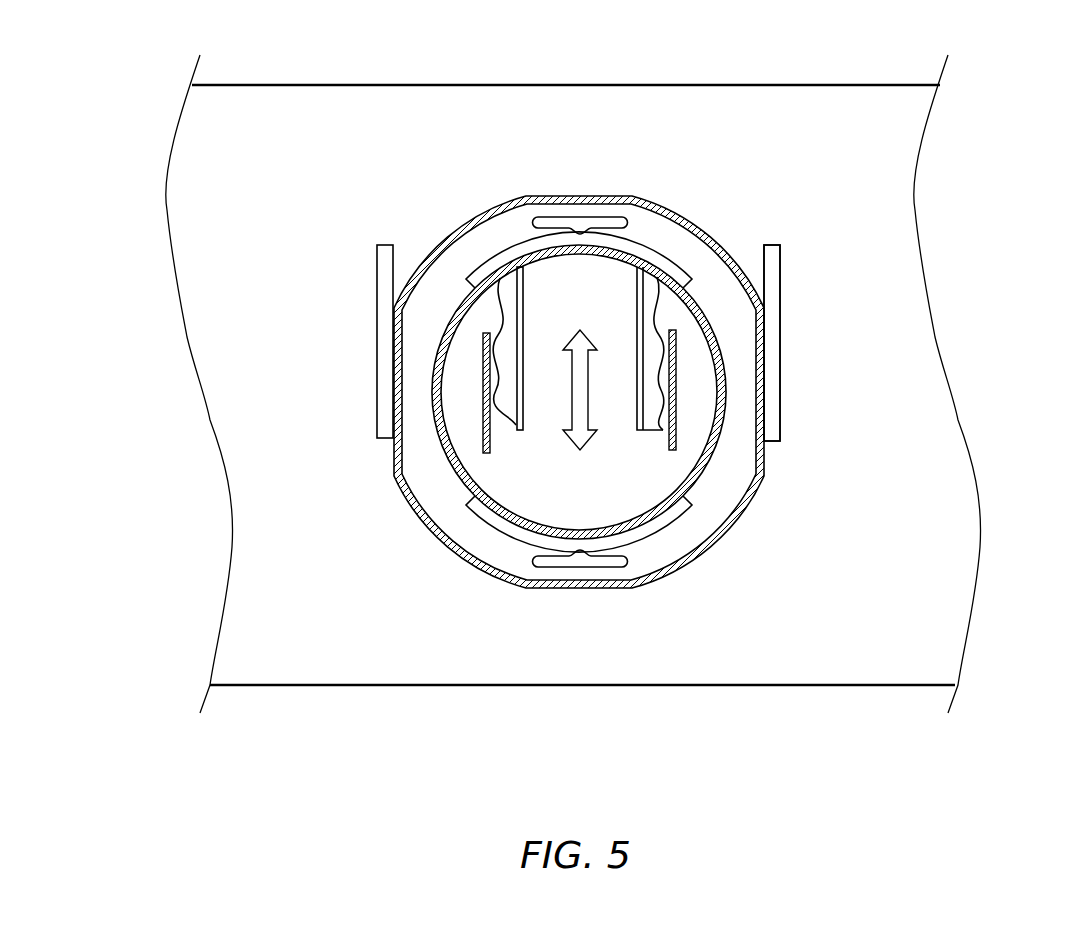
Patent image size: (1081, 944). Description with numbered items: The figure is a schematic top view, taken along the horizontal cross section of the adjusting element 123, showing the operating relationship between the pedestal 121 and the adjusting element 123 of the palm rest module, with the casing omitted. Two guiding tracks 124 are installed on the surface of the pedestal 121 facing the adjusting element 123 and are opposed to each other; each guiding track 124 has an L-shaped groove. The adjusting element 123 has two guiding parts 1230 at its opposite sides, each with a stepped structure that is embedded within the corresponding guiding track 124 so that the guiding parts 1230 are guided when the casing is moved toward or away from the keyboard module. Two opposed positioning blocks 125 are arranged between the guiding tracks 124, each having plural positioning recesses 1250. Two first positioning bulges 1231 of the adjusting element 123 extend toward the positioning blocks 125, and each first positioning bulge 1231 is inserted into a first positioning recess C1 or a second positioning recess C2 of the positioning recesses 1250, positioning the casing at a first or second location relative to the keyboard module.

The pedestal 121 is at (838, 102).
The adjusting element 123 is at (648, 572).
The guiding track 124 is at (781, 274).
The positioning block 125 is at (510, 320).
The guiding part 1230 is at (380, 446).
The first positioning bulge 1231 is at (494, 442).
The positioning recess 1250 is at (516, 283).